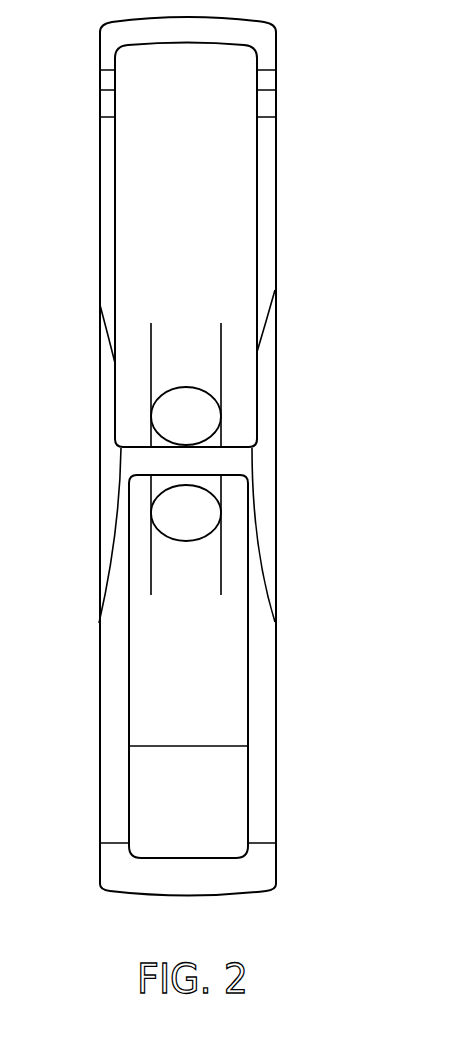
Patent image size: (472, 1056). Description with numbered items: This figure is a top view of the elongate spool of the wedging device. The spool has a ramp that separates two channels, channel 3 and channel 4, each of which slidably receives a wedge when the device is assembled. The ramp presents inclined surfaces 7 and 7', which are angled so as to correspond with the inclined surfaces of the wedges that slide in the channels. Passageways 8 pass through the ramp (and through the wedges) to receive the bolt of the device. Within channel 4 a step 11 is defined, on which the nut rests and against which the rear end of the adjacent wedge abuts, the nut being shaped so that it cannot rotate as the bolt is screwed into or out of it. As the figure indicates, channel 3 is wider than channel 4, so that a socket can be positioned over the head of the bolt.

The channel 3 is at (168, 210).
The channel 4 is at (190, 685).
The inclined surface 7 is at (225, 535).
The inclined surface 7' is at (227, 366).
The passageway 8 is at (172, 517).
The step 11 is at (188, 800).